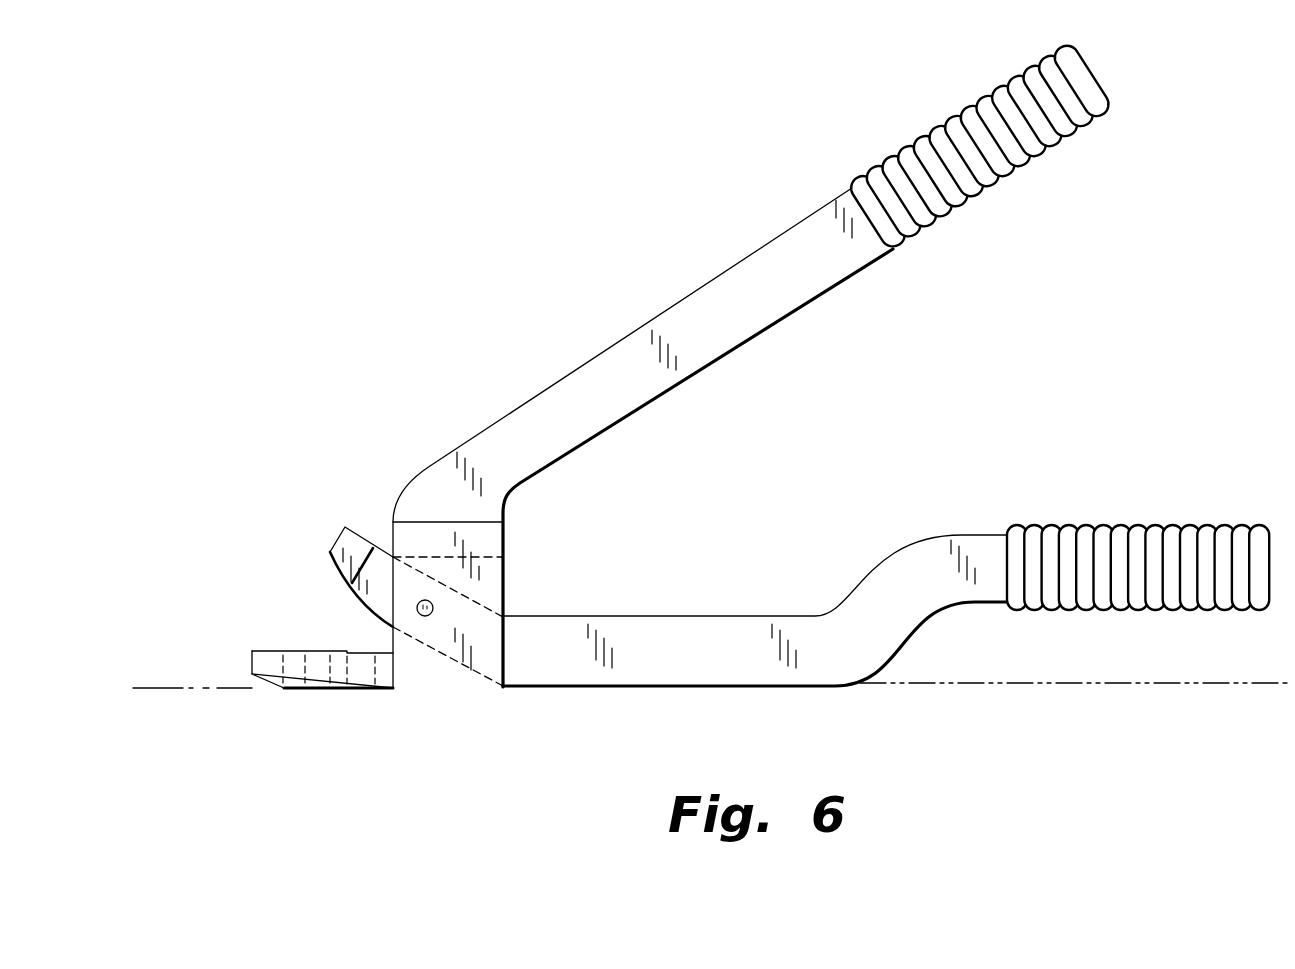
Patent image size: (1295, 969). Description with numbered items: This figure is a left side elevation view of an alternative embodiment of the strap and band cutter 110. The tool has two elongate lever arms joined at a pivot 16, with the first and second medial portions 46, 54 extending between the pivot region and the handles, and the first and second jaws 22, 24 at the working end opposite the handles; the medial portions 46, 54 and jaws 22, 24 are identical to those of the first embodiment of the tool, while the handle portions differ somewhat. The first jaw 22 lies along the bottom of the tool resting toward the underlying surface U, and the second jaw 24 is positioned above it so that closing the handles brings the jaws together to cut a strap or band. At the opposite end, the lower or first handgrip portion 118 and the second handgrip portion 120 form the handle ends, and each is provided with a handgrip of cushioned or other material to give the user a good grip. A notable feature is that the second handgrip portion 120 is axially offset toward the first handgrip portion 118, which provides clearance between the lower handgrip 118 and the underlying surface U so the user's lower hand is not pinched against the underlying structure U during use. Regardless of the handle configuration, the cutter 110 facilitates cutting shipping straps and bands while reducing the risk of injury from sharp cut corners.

The strap and band cutter 110 is at (760, 404).
The first handgrip portion 118 is at (1002, 187).
The second handgrip portion 120 is at (1172, 524).
The first medial portion 46 is at (503, 582).
The second medial portion 54 is at (457, 670).
The second jaw 24 is at (338, 533).
The pivot 16 is at (417, 608).
The first jaw 22 is at (283, 689).
The underlying surface U is at (1063, 683).